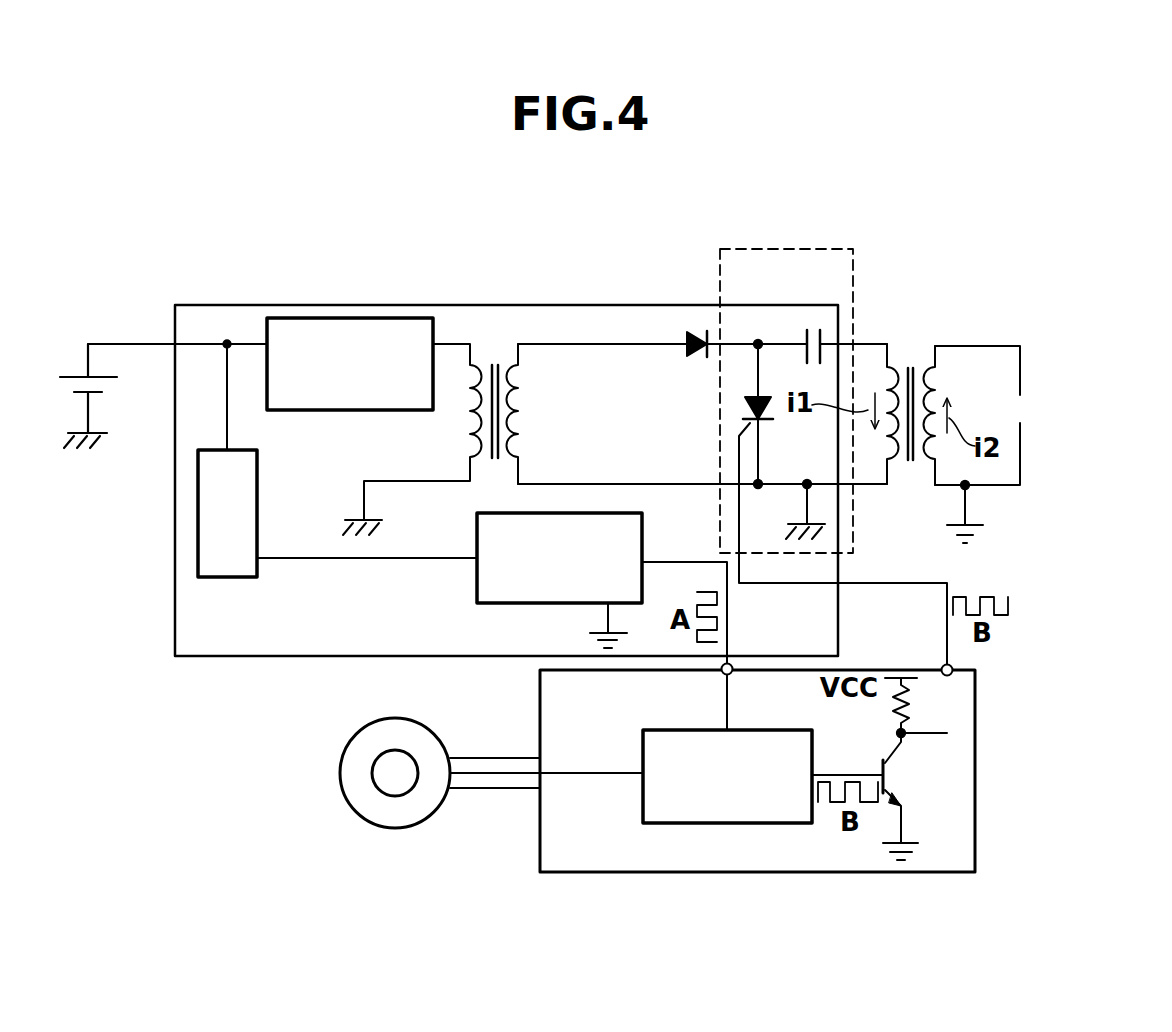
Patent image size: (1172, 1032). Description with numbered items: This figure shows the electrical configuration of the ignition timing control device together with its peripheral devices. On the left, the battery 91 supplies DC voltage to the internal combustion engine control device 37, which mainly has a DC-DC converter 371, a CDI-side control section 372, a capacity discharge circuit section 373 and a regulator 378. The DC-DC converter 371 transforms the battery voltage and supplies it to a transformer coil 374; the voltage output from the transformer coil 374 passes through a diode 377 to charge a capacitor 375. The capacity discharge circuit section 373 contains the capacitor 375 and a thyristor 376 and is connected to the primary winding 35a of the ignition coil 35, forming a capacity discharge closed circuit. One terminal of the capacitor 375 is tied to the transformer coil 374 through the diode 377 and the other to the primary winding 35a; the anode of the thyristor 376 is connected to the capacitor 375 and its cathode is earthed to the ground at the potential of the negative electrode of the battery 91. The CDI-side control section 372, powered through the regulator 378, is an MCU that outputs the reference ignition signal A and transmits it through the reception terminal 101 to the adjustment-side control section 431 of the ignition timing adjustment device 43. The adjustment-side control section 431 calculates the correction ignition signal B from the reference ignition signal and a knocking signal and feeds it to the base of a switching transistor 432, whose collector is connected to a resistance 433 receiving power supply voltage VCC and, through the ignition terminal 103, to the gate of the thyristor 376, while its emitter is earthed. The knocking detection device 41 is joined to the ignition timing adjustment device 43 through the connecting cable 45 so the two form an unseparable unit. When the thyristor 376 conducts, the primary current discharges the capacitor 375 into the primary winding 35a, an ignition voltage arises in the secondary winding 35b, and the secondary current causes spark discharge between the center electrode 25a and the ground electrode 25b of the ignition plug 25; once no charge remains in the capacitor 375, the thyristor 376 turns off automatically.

The ignition plug 25 is at (1050, 444).
The center electrode 25a is at (1022, 392).
The ground electrode 25b is at (1022, 426).
The ignition coil 35 is at (917, 417).
The primary winding 35a is at (897, 365).
The secondary winding 35b is at (924, 365).
The internal combustion engine control device 37 is at (330, 305).
The DC-DC converter 371 is at (340, 411).
The CDI-side control section 372 is at (477, 583).
The capacity discharge circuit section 373 is at (788, 240).
The transformer coil 374 is at (494, 358).
The capacitor 375 is at (814, 330).
The thyristor 376 is at (745, 410).
The diode 377 is at (696, 334).
The regulator 378 is at (198, 528).
The knocking detection device 41 is at (340, 773).
The ignition timing adjustment device 43 is at (975, 750).
The adjustment-side control section 431 is at (643, 805).
The switching transistor 432 is at (886, 773).
The resistance 433 is at (898, 712).
The connecting cable 45 is at (490, 757).
The battery 91 is at (76, 376).
The reception terminal 101 is at (722, 674).
The ignition terminal 103 is at (954, 676).